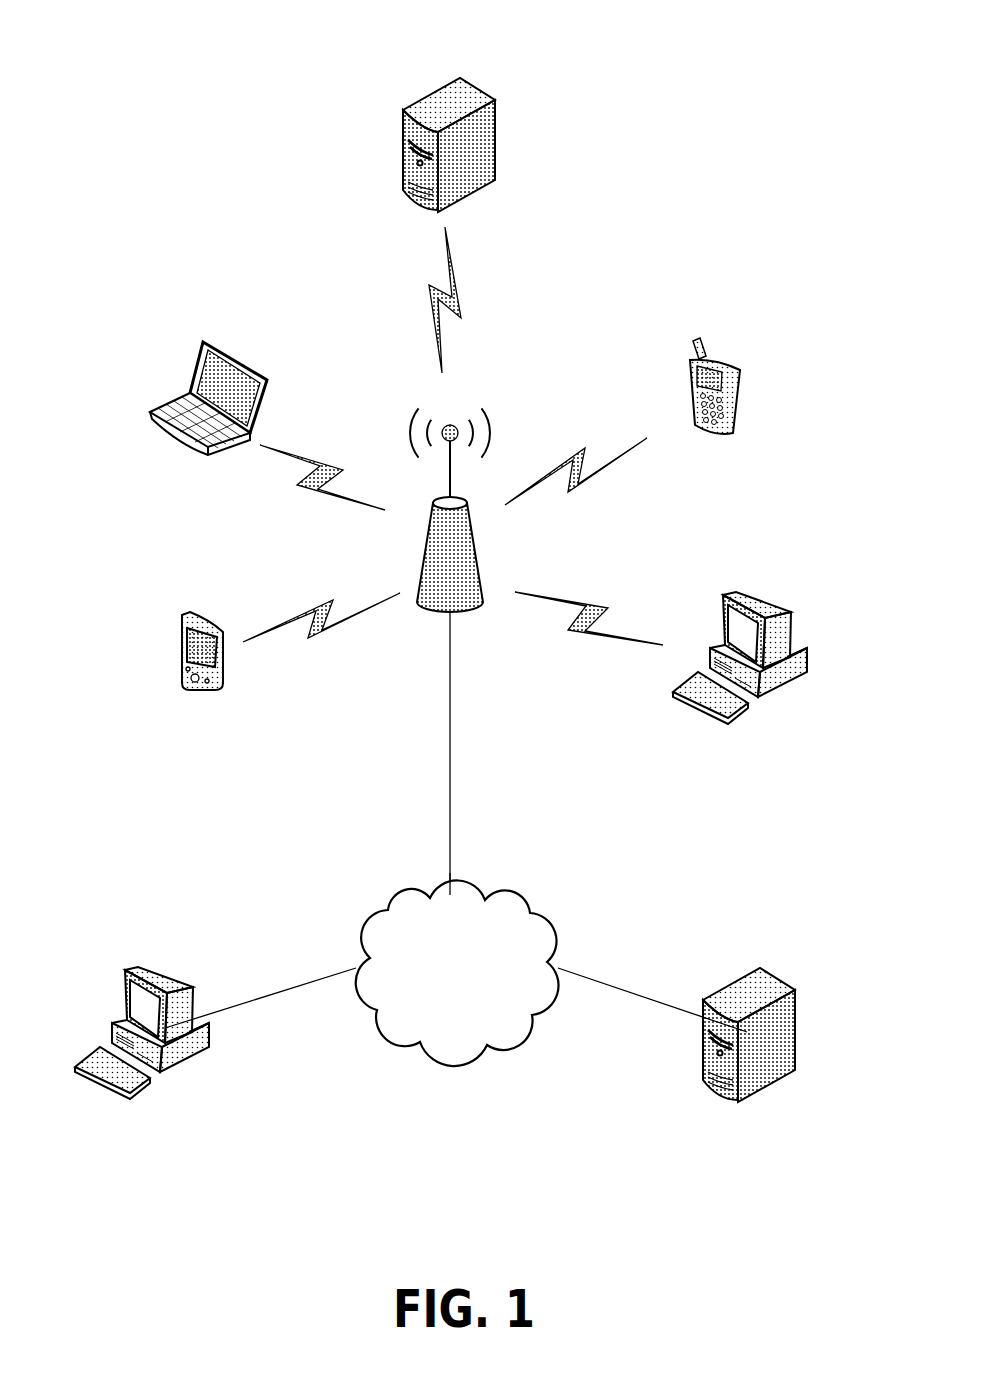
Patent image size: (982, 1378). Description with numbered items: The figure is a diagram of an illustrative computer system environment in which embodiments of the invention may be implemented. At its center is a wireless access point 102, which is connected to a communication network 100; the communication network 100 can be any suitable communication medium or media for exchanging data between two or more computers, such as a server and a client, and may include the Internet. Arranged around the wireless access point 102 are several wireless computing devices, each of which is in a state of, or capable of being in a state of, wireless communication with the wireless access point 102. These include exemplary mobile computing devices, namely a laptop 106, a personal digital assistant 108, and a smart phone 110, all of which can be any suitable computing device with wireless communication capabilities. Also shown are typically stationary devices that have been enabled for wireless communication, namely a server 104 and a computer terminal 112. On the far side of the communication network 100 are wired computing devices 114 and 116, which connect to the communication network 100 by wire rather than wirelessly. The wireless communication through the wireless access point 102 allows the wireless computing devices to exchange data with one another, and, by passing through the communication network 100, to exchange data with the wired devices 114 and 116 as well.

The communication network 100 is at (457, 969).
The wireless access point 102 is at (465, 398).
The server 104 is at (472, 60).
The laptop 106 is at (219, 333).
The personal digital assistant 108 is at (195, 602).
The smart phone 110 is at (720, 343).
The computer terminal 112 is at (767, 588).
The wired computing device 114 is at (160, 933).
The wired computing device 116 is at (770, 935).